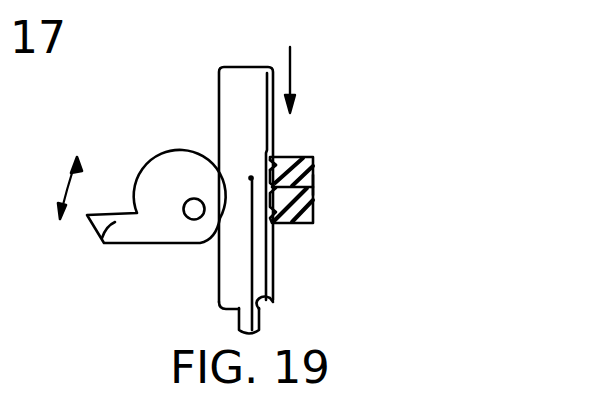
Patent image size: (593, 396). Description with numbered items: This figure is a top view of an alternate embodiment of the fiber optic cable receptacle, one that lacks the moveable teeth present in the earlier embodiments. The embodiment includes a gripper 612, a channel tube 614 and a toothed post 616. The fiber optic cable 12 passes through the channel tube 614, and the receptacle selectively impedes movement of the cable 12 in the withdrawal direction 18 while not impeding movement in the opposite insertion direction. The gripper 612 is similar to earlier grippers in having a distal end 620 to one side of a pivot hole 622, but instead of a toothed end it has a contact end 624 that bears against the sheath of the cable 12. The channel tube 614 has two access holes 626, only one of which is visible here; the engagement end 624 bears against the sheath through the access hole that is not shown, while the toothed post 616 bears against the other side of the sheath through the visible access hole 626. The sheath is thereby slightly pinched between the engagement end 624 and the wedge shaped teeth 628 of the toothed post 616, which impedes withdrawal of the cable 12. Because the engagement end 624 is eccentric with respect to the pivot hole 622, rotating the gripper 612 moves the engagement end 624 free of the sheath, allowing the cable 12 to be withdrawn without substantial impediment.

The fiber optic cable 12 is at (263, 315).
The withdrawal direction 18 is at (292, 78).
The gripper 612 is at (140, 167).
The channel tube 614 is at (250, 70).
The toothed post 616 is at (297, 223).
The distal end 620 is at (102, 238).
The pivot hole 622 is at (193, 198).
The contact end 624 is at (251, 180).
The access hole 626 is at (272, 158).
The wedge shaped teeth 628 is at (312, 183).